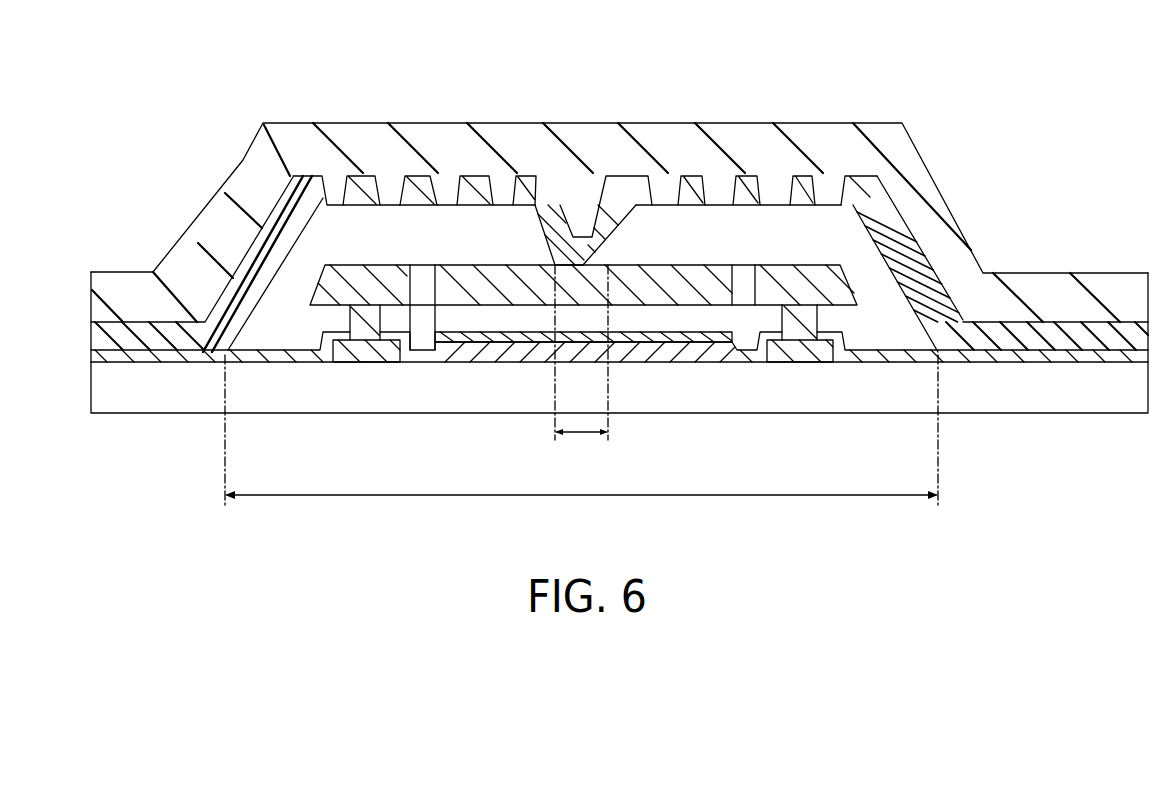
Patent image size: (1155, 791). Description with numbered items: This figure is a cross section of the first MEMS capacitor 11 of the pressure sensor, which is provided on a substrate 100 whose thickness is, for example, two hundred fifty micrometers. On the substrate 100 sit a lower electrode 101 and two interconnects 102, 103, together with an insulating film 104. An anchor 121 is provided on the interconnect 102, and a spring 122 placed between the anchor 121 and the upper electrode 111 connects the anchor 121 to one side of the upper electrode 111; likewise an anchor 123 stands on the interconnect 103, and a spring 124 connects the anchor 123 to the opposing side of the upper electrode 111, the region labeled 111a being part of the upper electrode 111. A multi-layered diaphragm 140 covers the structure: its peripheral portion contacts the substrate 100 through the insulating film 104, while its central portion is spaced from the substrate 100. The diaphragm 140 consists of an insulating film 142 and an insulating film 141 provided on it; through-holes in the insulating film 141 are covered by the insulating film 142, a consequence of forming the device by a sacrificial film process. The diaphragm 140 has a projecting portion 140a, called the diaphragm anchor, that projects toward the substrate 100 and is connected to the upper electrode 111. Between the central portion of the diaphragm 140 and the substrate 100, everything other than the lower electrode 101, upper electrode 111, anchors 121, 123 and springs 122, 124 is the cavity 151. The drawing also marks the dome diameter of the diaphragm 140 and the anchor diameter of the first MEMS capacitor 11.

The first MEMS capacitor 11 is at (640, 77).
The substrate 100 is at (1095, 407).
The lower electrode 101 is at (503, 357).
The interconnect 102 is at (365, 367).
The interconnect 103 is at (805, 365).
The insulating film 104 is at (630, 332).
The upper electrode 111 is at (583, 261).
The portion of conductive layer 111a is at (490, 272).
The anchor 121 is at (350, 273).
The spring 122 is at (417, 283).
The anchor 123 is at (800, 277).
The spring 124 is at (750, 293).
The diaphragm 140 is at (137, 196).
The projecting portion 140a is at (617, 247).
The insulating film 141 is at (621, 264).
The insulating film 142 is at (230, 210).
The cavity 151 is at (773, 215).